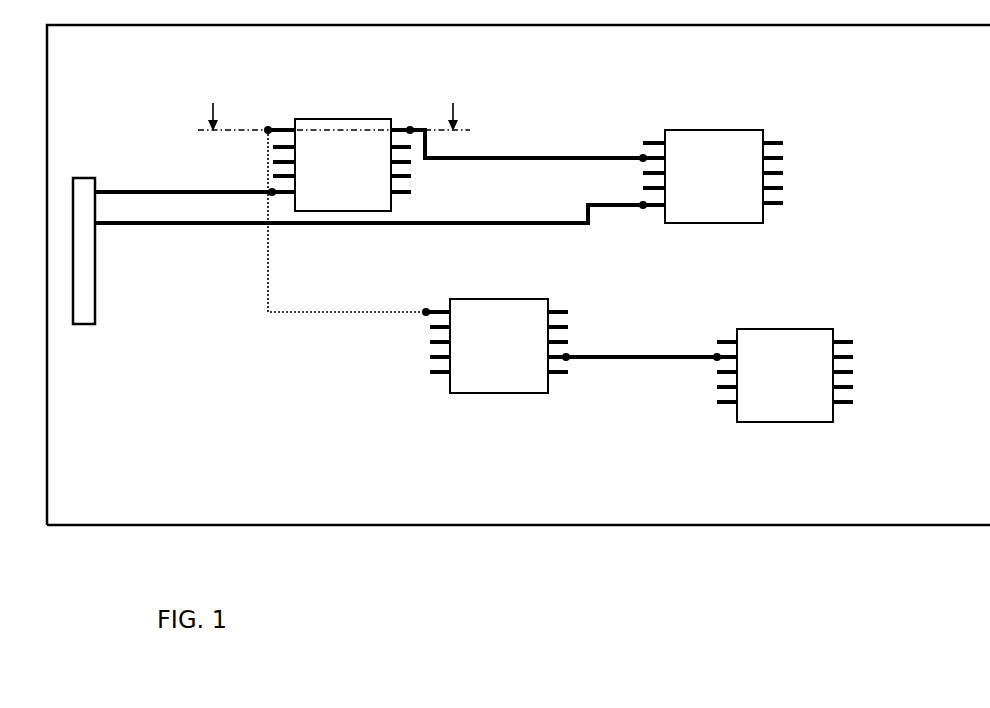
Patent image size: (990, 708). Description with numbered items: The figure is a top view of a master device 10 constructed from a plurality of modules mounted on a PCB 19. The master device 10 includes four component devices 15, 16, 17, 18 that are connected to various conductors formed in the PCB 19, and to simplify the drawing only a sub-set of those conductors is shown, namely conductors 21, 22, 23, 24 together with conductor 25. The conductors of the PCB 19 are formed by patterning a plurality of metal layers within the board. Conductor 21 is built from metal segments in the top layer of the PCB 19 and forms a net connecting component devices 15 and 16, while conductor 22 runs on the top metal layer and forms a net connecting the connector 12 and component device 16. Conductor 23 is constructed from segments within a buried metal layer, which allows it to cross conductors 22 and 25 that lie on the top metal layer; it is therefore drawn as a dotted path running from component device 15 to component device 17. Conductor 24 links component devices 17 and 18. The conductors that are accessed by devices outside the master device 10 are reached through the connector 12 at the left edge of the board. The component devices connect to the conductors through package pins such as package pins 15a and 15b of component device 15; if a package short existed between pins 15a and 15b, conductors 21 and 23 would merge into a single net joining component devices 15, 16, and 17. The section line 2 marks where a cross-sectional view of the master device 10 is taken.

The master device 10 is at (435, 526).
The connector 12 is at (85, 325).
The component device 15 is at (356, 176).
The package pin 15a is at (278, 126).
The package pin 15b is at (409, 124).
The component device 16 is at (726, 187).
The component device 17 is at (511, 358).
The component device 18 is at (795, 388).
The PCB 19 is at (924, 204).
The conductor 21 is at (494, 162).
The conductor 22 is at (178, 228).
The conductor 23 is at (303, 318).
The conductor 24 is at (624, 362).
The conductor 25 is at (174, 185).
The line 2- 2 is at (334, 105).